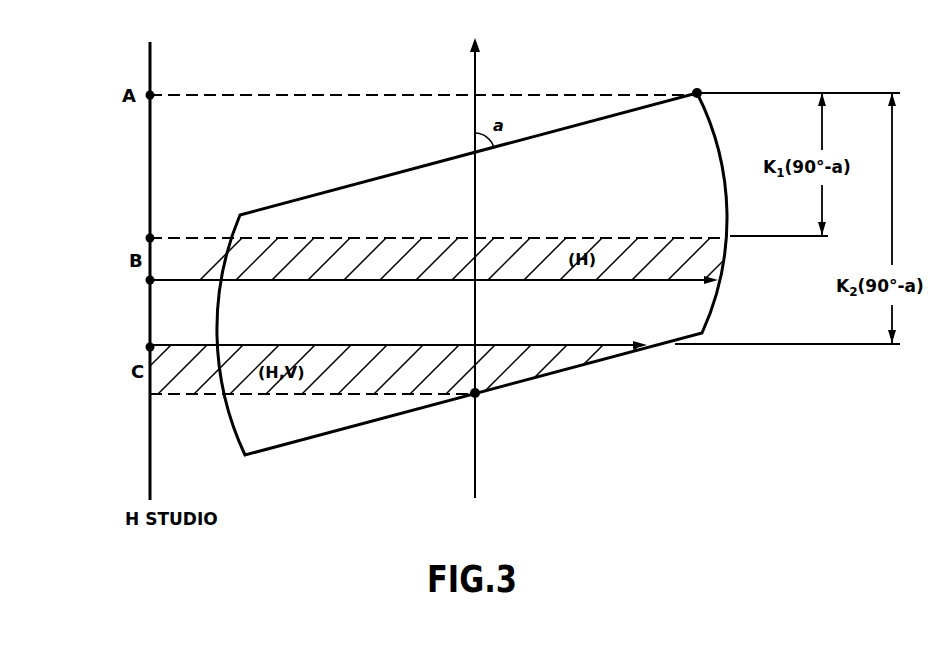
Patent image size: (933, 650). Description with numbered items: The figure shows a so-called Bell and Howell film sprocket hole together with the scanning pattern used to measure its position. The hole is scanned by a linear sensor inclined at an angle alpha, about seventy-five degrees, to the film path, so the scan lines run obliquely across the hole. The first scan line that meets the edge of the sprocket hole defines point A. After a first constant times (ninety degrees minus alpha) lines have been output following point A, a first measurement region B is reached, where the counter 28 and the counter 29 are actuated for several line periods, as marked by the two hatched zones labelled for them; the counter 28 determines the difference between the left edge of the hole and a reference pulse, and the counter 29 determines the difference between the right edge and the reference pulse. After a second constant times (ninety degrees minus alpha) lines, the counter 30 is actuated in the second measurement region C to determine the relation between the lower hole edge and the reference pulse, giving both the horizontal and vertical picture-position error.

The counter 28 is at (489, 227).
The counter 29 is at (434, 291).
The counter 30 is at (398, 336).